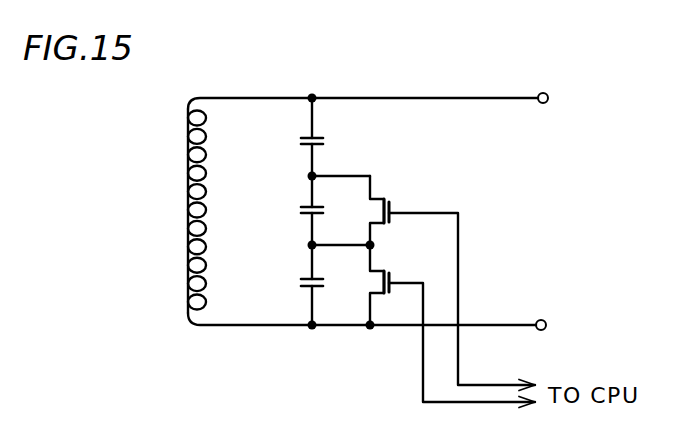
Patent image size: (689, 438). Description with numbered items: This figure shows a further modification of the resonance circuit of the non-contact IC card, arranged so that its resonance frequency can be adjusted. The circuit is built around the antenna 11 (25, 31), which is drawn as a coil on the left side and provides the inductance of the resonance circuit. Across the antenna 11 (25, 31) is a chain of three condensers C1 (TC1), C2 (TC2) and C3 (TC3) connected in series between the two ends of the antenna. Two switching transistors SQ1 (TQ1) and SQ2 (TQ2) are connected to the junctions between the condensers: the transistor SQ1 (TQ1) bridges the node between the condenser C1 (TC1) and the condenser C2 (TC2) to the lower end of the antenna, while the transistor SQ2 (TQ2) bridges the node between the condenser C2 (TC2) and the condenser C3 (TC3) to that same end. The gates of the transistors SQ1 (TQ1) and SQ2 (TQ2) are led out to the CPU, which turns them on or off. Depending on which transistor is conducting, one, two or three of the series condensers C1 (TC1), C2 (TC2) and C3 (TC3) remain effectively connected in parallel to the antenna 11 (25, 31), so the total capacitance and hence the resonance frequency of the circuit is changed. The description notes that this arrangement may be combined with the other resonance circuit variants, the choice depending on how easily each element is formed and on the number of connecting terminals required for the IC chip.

The antenna 11 is at (172, 211).
The antenna 25 is at (250, 211).
The antenna 31 is at (184, 210).
The condenser C1 is at (270, 148).
The condenser TC1 is at (299, 140).
The condenser C2 is at (270, 219).
The condenser TC2 is at (299, 210).
The condenser C3 is at (270, 289).
The condenser TC3 is at (298, 282).
The transistor SQ1 is at (485, 283).
The transistor TQ1 is at (389, 205).
The transistor SQ2 is at (485, 326).
The transistor TQ2 is at (389, 276).